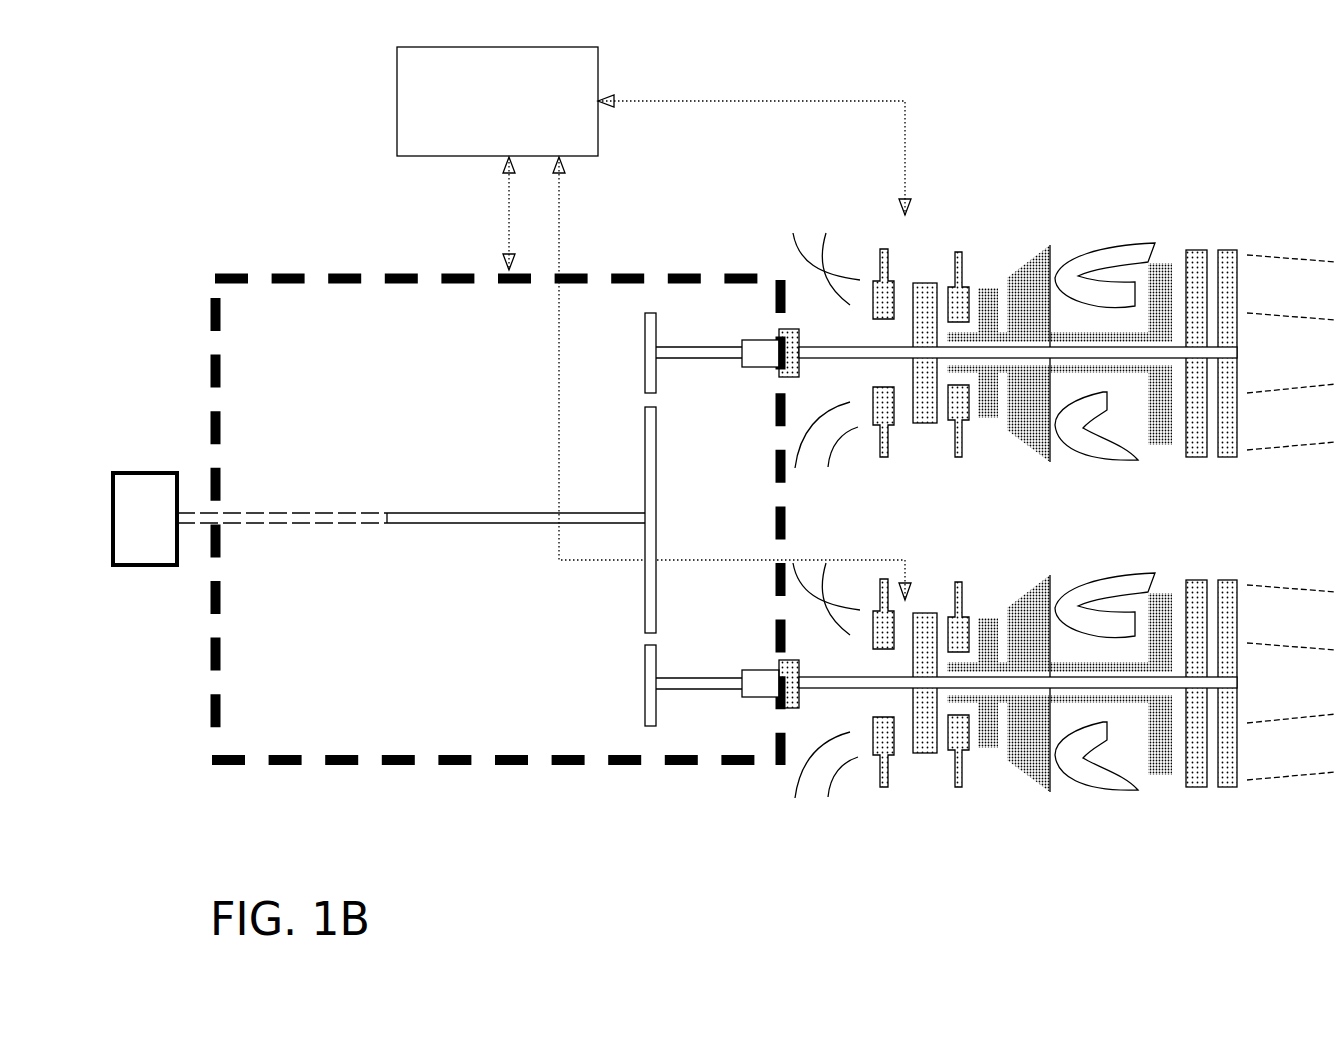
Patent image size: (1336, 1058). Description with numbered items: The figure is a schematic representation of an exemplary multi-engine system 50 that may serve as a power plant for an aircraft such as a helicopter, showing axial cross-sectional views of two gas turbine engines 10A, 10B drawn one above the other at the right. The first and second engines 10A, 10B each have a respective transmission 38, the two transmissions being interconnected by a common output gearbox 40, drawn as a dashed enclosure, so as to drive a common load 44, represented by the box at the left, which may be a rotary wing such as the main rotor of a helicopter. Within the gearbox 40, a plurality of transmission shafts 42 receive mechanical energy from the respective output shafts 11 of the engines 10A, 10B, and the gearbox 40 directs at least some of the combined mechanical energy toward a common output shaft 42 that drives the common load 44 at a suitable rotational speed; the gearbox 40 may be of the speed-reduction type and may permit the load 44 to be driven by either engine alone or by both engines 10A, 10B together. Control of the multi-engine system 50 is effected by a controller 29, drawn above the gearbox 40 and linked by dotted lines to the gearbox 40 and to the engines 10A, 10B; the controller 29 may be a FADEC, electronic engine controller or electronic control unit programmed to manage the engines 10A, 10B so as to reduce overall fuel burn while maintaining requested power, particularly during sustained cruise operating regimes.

The first gas turbine engine 10A is at (1094, 210).
The second gas turbine engine 10B is at (1022, 820).
The output shaft 11 is at (831, 345).
The controller 29 is at (598, 72).
The transmission 38 is at (840, 812).
The output gearbox 40 is at (393, 765).
The transmission shaft 42 is at (200, 527).
The common load 44 is at (147, 472).
The multi-engine system 50 is at (290, 197).